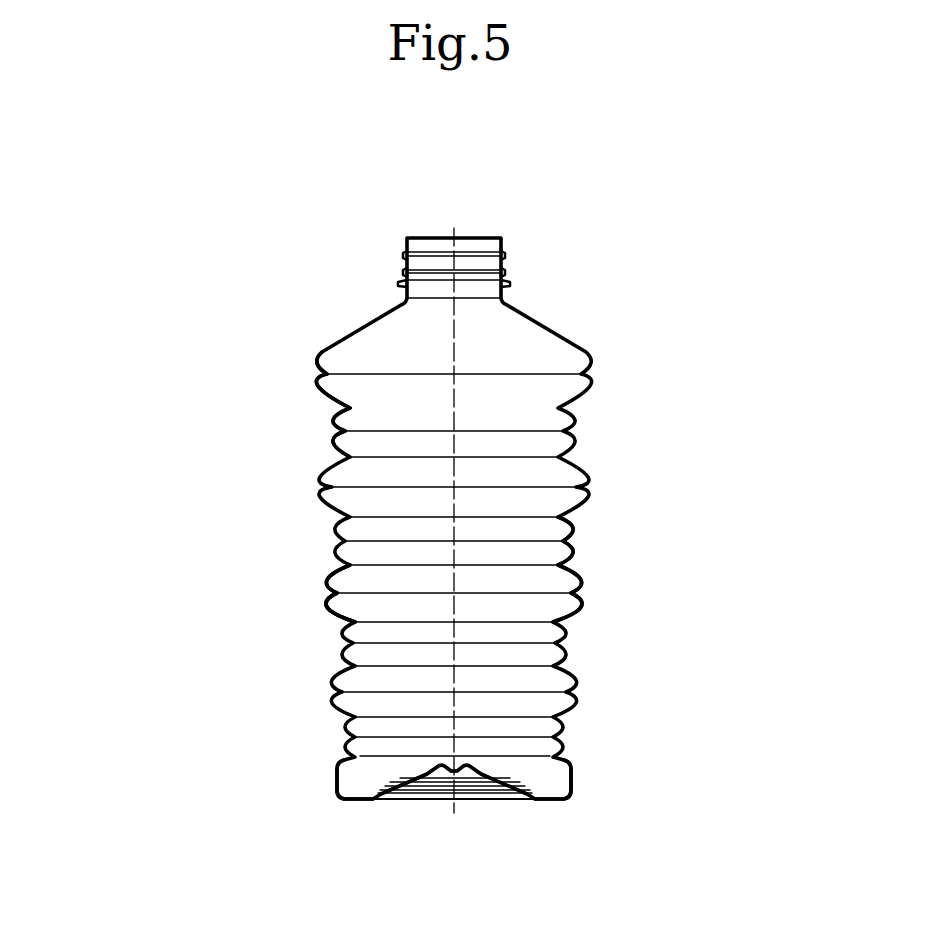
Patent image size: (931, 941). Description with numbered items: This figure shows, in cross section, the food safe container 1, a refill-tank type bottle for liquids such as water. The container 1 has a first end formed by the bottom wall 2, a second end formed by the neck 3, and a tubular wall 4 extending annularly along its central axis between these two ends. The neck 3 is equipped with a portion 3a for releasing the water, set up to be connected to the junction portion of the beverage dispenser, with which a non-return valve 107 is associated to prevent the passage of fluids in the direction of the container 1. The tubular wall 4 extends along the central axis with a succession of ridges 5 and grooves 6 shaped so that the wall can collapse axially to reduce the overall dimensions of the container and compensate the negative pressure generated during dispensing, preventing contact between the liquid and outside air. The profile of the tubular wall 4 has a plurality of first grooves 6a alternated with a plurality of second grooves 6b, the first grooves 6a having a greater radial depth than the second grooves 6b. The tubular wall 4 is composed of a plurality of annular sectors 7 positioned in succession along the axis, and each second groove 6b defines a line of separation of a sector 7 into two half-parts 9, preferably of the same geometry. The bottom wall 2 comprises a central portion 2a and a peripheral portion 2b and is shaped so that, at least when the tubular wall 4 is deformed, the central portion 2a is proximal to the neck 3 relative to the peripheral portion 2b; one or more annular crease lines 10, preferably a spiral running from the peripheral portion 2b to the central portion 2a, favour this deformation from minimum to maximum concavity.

The food safe container 1 is at (658, 343).
The bottom wall 2 is at (548, 803).
The central portion 2a is at (443, 770).
The peripheral portion 2b is at (372, 797).
The neck 3 is at (532, 303).
The portion for releasing the water 3a is at (505, 258).
The non-return valve 107 is at (467, 263).
The tubular wall 4 is at (615, 503).
The ridges 5 is at (323, 353).
The grooves 6 is at (323, 390).
The first grooves 6a is at (340, 564).
The second grooves 6b is at (330, 594).
The sectors 7 is at (307, 347).
The half-parts 9 is at (578, 617).
The annular crease lines 10 is at (493, 797).